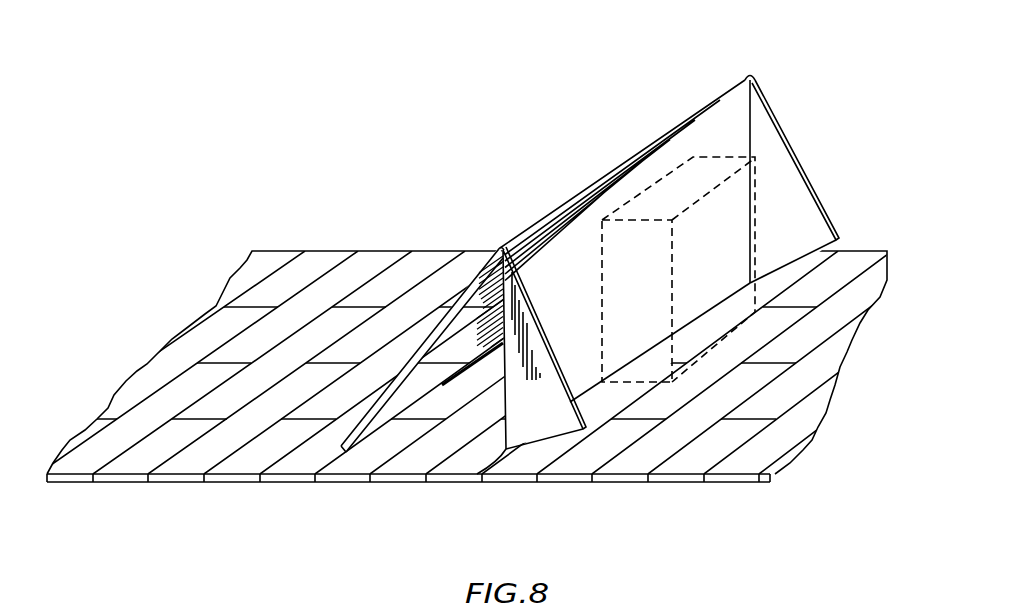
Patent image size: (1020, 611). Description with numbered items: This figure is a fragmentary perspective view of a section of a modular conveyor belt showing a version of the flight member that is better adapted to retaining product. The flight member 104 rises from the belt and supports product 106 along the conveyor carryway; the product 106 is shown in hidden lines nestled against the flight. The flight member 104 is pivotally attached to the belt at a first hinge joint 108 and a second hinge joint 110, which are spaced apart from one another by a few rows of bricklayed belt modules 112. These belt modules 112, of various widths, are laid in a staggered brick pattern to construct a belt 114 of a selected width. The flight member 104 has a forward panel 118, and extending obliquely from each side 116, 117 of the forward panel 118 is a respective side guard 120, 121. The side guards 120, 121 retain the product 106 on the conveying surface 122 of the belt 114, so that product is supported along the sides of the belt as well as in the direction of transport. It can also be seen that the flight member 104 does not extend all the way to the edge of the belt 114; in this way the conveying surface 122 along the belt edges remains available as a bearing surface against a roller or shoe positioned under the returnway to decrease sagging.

The flight member 104 is at (729, 105).
The product 106 is at (664, 172).
The first hinge joint 108 is at (476, 477).
The second hinge joint 110 is at (343, 451).
The belt modules 112 is at (425, 262).
The belt 114 is at (510, 353).
The side of forward panel 116 is at (503, 330).
The side of forward panel 117 is at (752, 114).
The forward panel 118 is at (553, 234).
The side guard 120 is at (557, 432).
The side guard 121 is at (812, 221).
The conveying surface 122 is at (838, 265).